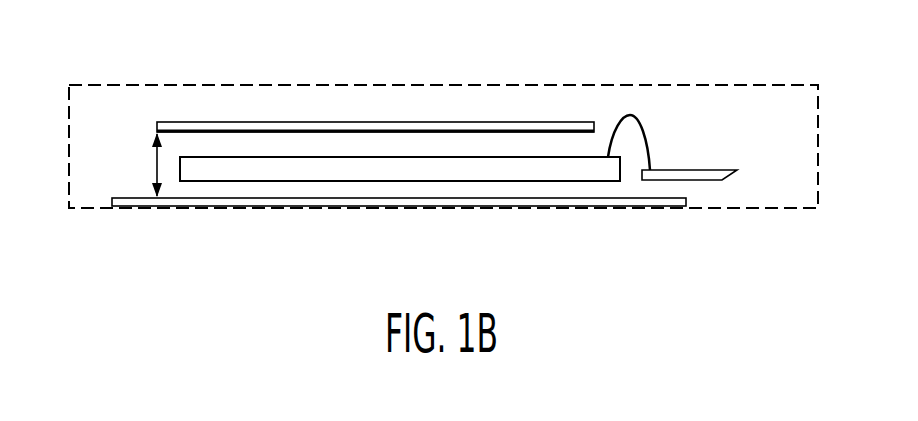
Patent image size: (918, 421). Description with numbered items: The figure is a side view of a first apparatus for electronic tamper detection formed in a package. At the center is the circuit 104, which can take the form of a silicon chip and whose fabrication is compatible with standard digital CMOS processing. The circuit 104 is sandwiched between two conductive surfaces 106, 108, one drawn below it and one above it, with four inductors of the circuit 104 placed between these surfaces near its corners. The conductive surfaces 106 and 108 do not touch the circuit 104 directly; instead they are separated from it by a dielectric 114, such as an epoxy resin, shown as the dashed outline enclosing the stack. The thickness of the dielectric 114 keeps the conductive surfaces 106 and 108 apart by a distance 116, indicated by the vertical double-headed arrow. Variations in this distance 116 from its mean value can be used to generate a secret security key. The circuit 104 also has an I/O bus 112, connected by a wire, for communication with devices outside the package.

The circuit 104 is at (602, 156).
The conductive surface 106 is at (113, 199).
The conductive surface 108 is at (188, 128).
The I/O bus 112 is at (710, 169).
The dielectric 114 is at (738, 97).
The distance 116 is at (157, 167).